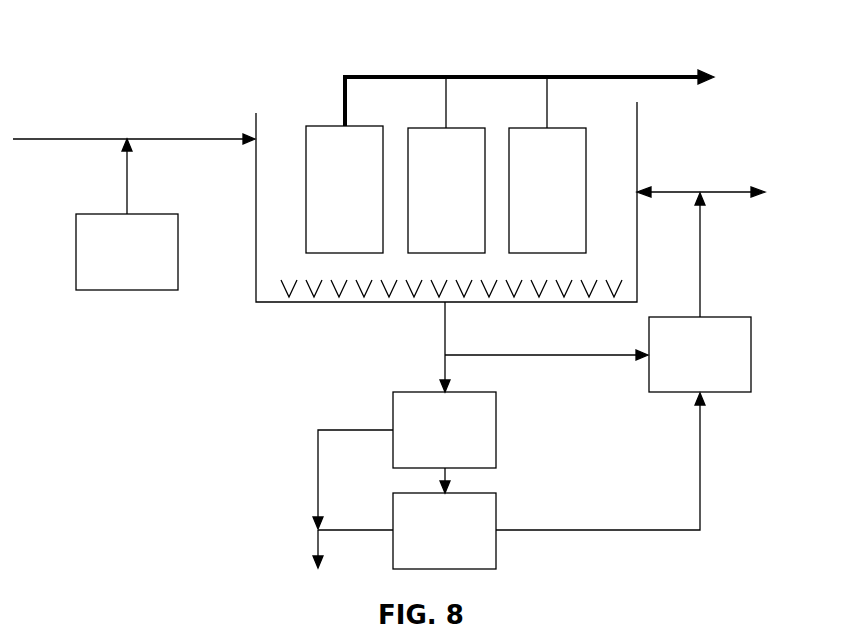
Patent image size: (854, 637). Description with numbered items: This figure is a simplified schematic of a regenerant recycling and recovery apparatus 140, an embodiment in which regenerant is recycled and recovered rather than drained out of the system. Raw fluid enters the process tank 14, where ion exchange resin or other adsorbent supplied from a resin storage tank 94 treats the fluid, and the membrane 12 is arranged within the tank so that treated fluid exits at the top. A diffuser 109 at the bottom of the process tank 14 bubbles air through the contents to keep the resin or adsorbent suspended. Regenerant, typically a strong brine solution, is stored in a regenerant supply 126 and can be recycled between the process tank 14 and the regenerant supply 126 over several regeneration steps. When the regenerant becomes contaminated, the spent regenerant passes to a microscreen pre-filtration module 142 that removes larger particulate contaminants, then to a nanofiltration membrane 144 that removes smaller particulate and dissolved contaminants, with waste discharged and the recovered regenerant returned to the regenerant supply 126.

The regenerant recycling and recovery apparatus 140 is at (186, 43).
The process tank 14 is at (278, 178).
The membrane 12 is at (446, 189).
The diffuser 109 is at (280, 293).
The resin storage tank 94 is at (127, 252).
The regenerant supply 126 is at (700, 354).
The microscreen pre-filtration module 142 is at (444, 430).
The nanofiltration membrane 144 is at (444, 531).